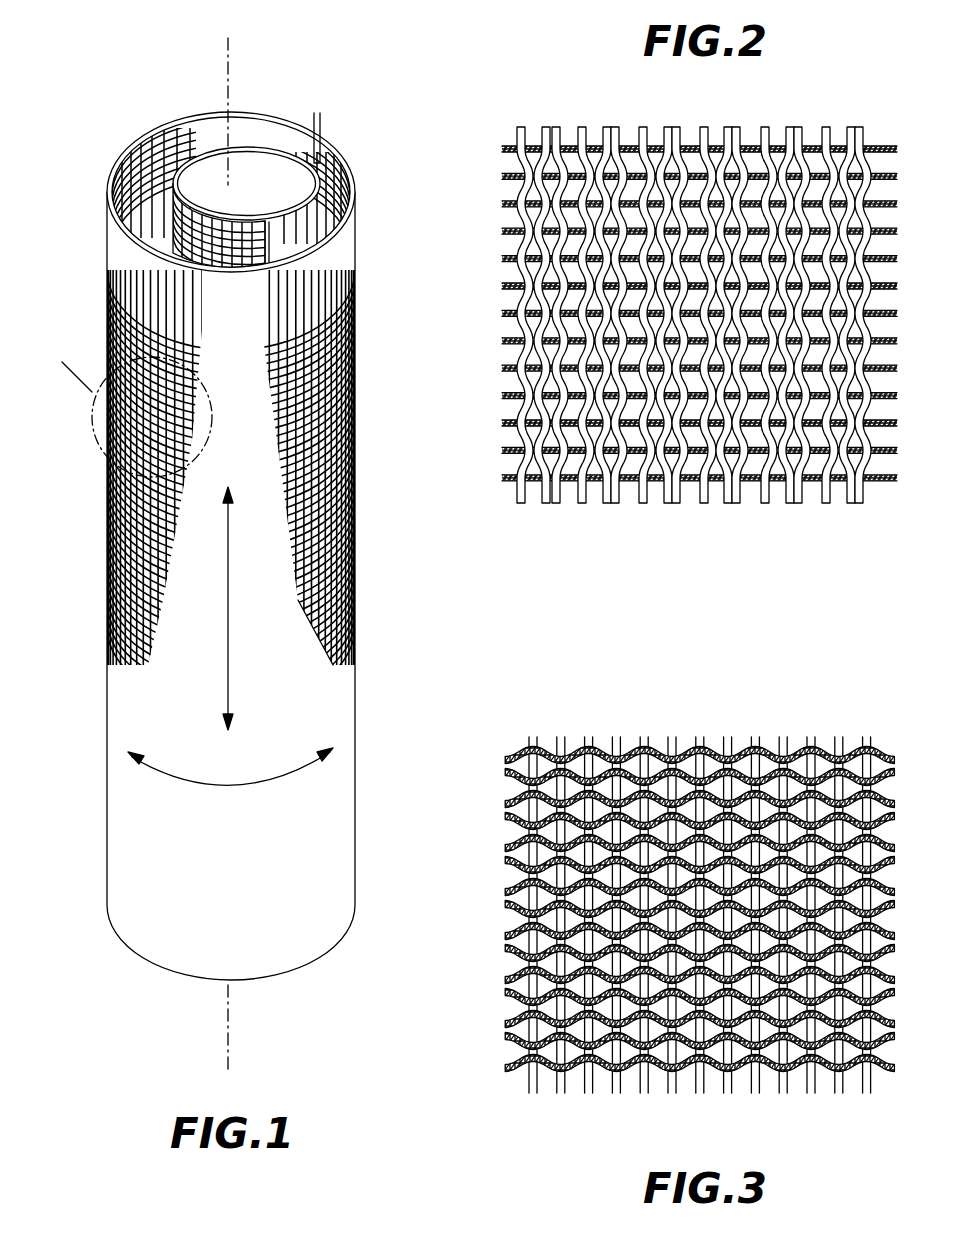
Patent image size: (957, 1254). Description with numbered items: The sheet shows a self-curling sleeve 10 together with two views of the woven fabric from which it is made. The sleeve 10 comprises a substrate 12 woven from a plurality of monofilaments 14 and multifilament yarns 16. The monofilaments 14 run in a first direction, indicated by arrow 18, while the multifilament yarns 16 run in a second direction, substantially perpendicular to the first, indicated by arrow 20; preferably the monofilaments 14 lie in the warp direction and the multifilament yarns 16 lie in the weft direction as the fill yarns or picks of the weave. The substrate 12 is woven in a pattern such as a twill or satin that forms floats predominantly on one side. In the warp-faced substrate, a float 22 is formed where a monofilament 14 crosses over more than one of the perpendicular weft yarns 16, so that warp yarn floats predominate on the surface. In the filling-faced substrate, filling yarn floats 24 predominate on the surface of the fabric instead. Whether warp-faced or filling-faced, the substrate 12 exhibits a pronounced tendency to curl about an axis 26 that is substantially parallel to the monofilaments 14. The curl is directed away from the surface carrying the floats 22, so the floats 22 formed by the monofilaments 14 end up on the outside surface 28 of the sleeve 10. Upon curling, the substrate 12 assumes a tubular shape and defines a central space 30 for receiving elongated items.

In FIG. 1, the self-curling sleeve 10 is at (232, 554).
In FIG. 1, the substrate 12 is at (296, 134).
In FIG. 1, the monofilaments 14 is at (268, 410).
In FIG. 2, the monofilaments 14 is at (545, 130).
In FIG. 3, the monofilaments 14 is at (588, 1086).
In FIG. 1, the multifilament yarns 16 is at (117, 660).
In FIG. 2, the multifilament yarns 16 is at (870, 142).
In FIG. 3, the multifilament yarns 16 is at (508, 930).
In FIG. 1, the arrow 18 is at (230, 672).
In FIG. 1, the arrow 20 is at (180, 782).
In FIG. 1, the float 22 is at (278, 306).
In FIG. 2, the float 22 is at (516, 240).
In FIG. 3, the filling yarn floats 24 is at (725, 1092).
In FIG. 1, the axis 26 is at (227, 80).
In FIG. 1, the outside surface 28 is at (353, 648).
In FIG. 1, the central space 30 is at (250, 170).